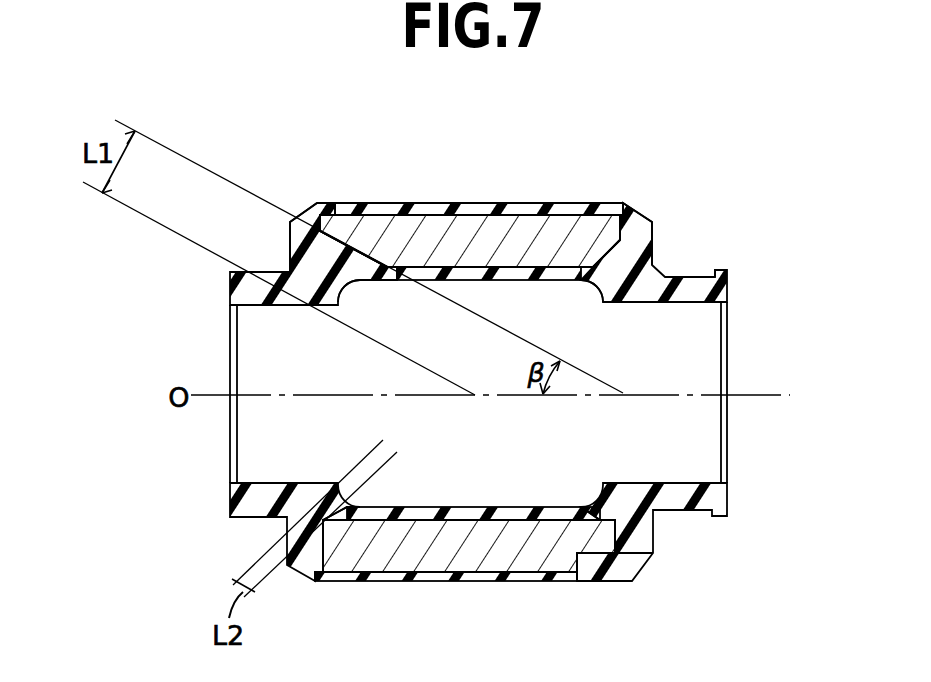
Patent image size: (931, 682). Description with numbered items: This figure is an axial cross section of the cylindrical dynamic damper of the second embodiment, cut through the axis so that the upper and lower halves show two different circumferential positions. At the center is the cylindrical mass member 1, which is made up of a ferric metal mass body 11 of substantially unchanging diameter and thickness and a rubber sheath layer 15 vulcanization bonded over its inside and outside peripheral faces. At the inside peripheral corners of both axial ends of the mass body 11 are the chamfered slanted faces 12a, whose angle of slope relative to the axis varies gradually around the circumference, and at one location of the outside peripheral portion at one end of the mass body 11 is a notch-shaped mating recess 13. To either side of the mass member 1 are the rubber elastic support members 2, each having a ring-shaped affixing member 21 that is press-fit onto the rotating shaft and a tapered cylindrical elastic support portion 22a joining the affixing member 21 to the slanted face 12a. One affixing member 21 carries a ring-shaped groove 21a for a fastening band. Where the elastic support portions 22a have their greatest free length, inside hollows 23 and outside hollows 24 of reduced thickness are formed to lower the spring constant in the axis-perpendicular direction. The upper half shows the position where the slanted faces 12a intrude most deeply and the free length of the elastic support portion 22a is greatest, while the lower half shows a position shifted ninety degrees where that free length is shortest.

The mass member 1 is at (490, 202).
The rubber elastic support member 2 is at (252, 257).
The mass body 11 is at (443, 233).
The slanted face 12a is at (348, 248).
The mating recess 13 is at (597, 557).
The rubber sheath layer 15 is at (541, 206).
The affixing member 21 is at (230, 282).
The ring-shaped groove 21a is at (705, 268).
The elastic support portion 22a is at (291, 268).
The inside hollow 23 is at (328, 300).
The outside hollow 24 is at (312, 215).